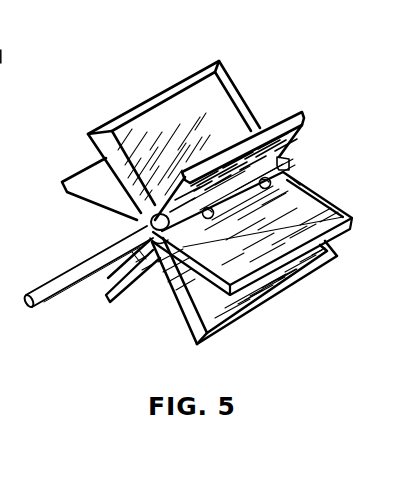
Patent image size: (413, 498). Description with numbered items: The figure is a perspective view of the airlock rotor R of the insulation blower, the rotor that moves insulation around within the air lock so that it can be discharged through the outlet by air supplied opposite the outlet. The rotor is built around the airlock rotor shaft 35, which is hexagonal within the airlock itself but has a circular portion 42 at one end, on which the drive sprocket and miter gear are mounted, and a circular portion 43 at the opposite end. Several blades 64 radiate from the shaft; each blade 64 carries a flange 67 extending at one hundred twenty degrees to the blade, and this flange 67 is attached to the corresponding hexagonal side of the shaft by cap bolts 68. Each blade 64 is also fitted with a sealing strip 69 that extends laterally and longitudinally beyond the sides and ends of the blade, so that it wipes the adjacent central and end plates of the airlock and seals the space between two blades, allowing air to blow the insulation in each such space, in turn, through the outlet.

The sealing strip 69 is at (168, 90).
The blade 64 is at (213, 94).
The airlock rotor R is at (266, 111).
The circular portion 43 is at (290, 157).
The cap bolt 68 is at (271, 182).
The flange 67 is at (296, 186).
The airlock rotor shaft 35 is at (128, 232).
The circular portion 42 is at (77, 289).